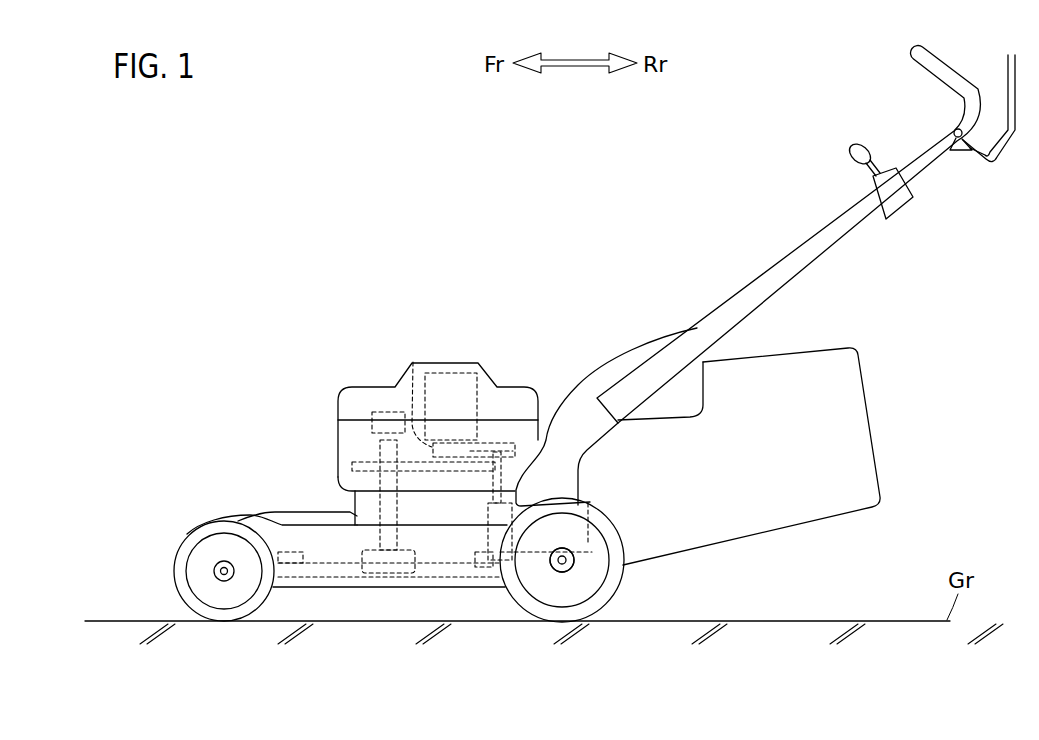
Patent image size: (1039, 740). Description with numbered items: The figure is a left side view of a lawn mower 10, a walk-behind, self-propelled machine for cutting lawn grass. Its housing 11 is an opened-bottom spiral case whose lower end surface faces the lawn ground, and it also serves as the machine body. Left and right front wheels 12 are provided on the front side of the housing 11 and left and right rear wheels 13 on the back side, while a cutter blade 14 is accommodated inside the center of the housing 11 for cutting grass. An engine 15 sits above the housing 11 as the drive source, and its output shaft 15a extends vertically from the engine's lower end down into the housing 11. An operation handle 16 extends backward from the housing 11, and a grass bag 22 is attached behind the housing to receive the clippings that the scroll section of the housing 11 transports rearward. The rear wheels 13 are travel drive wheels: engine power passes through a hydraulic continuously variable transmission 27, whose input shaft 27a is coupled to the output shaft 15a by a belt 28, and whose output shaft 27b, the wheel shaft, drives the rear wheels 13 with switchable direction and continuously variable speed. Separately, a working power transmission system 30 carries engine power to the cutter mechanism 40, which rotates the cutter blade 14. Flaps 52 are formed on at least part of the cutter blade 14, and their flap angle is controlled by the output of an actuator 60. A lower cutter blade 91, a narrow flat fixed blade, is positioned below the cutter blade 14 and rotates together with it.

The lawn mower 10 is at (240, 354).
The housing 11 is at (255, 513).
The front wheels 12 is at (223, 597).
The rear wheels 13 is at (588, 607).
The cutter blade 14 is at (343, 568).
The engine 15 is at (450, 374).
The output shaft 15a is at (413, 362).
The operation handle 16 is at (793, 249).
The grass bag 22 is at (850, 428).
The hydraulic continuously variable transmission 27 is at (588, 552).
The input shaft 27a is at (517, 479).
The output shaft 27b is at (567, 567).
The belt 28 is at (478, 428).
The working power transmission system 30 is at (366, 458).
The cutter mechanism 40 is at (372, 478).
The flaps 52 is at (288, 578).
The actuator 60 is at (385, 407).
The lower cutter blade 91 is at (417, 580).